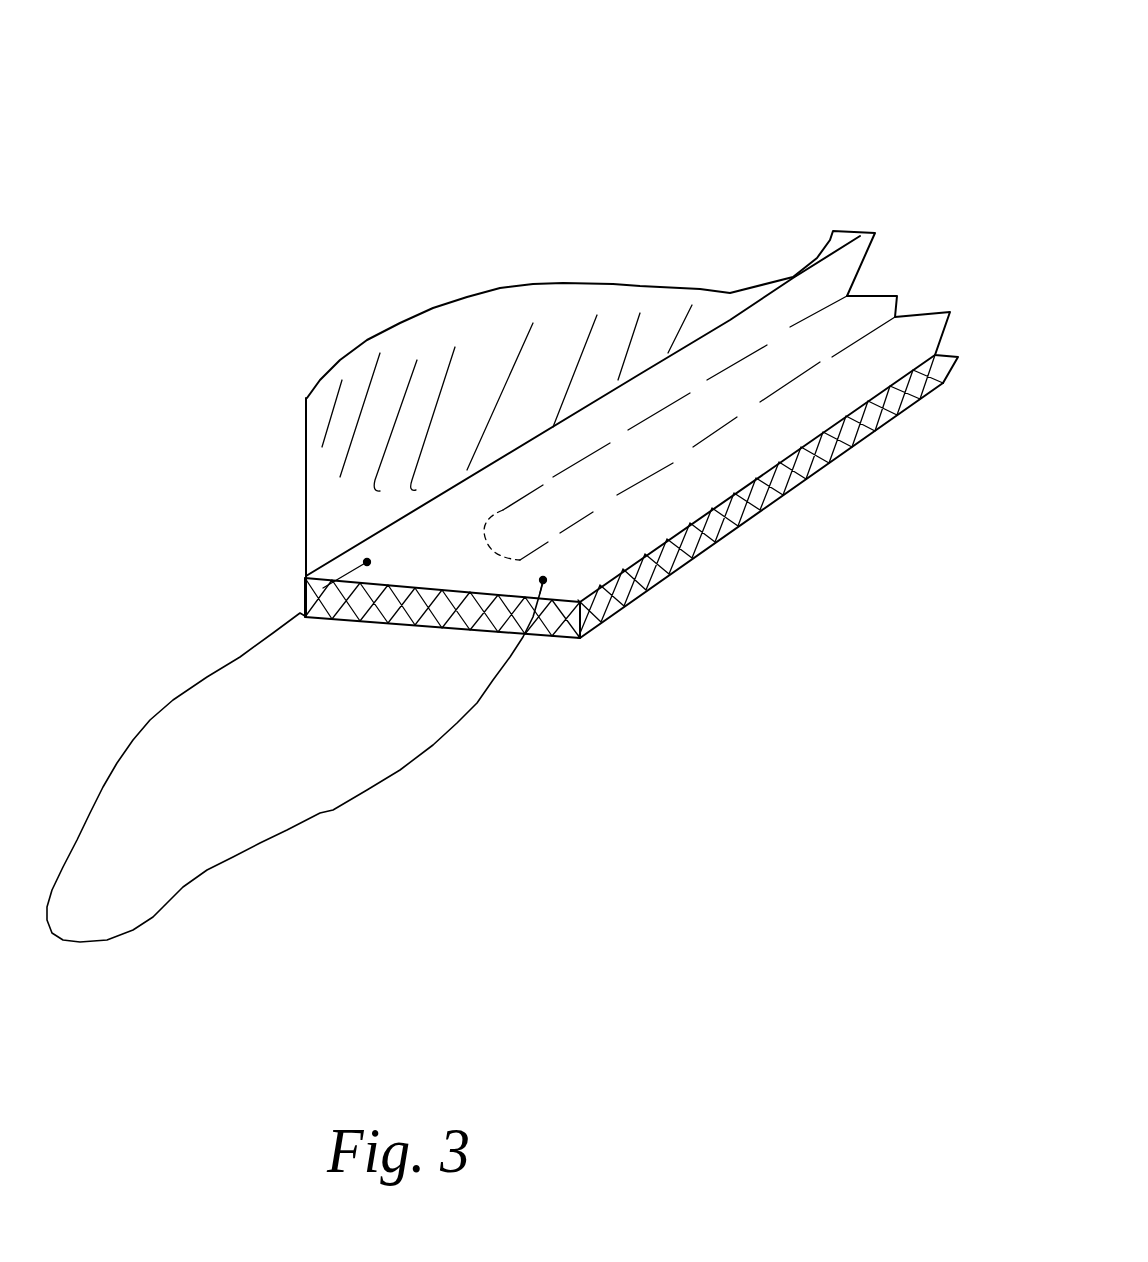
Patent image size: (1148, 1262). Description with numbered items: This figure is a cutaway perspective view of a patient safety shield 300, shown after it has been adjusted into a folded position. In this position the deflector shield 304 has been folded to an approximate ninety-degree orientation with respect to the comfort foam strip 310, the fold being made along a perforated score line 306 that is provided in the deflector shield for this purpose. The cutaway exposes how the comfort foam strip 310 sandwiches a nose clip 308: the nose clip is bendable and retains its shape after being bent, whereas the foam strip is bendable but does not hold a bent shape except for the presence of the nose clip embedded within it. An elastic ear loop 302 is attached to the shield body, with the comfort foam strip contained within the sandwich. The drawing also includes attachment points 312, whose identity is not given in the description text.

The finger splint assembly 300 is at (646, 42).
The finger 302 is at (80, 942).
The curved flap 304 is at (305, 460).
The panel strip 306 is at (717, 327).
The pocket 308 is at (740, 393).
The mesh base 310 is at (643, 567).
The attachment points 312 is at (343, 563).